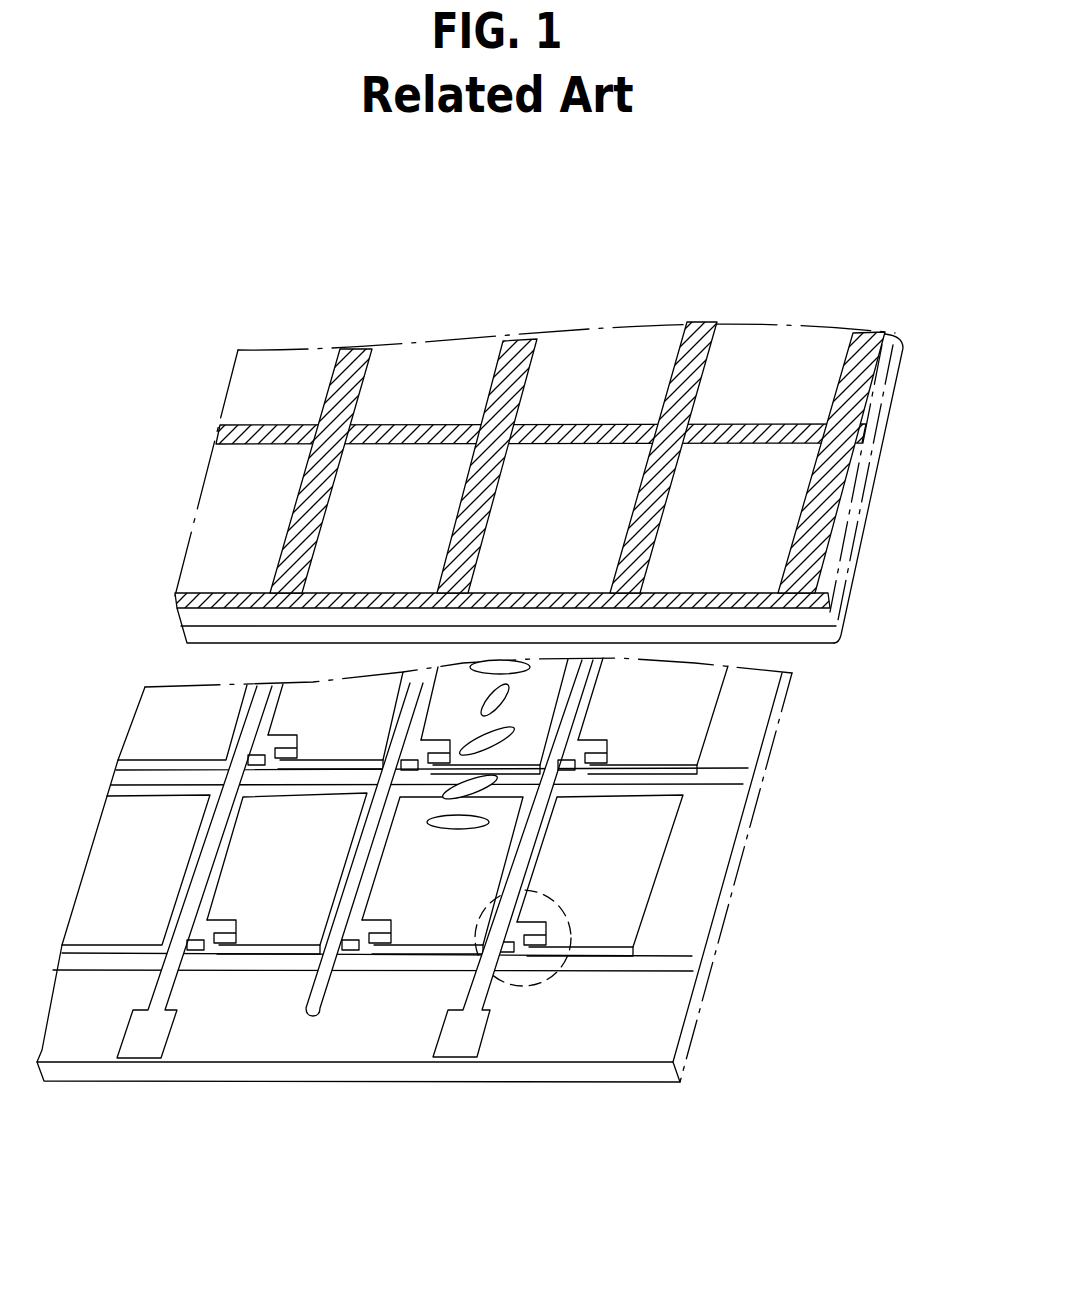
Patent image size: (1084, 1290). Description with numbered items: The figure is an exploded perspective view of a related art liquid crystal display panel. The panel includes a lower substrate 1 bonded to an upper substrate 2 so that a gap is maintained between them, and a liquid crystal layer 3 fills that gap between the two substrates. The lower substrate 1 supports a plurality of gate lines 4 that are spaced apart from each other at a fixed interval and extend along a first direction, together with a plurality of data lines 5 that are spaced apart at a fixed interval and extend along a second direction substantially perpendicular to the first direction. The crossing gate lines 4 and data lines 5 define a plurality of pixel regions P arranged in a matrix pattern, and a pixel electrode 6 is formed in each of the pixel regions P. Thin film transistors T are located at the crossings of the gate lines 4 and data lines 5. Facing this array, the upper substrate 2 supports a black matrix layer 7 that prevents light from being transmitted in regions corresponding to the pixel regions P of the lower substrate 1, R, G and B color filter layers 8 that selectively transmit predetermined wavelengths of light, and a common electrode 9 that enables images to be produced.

The lower substrate 1 is at (632, 1075).
The upper substrate 2 is at (810, 635).
The liquid crystal layer 3 is at (457, 760).
The gate lines 4 is at (650, 968).
The data lines 5 is at (470, 992).
The pixel electrodes 6 is at (435, 913).
The black matrix layer 7 is at (867, 437).
The color filter layers 8 is at (792, 347).
The common electrode 9 is at (810, 618).
The pixel regions P is at (642, 981).
The thin film transistors T is at (522, 993).